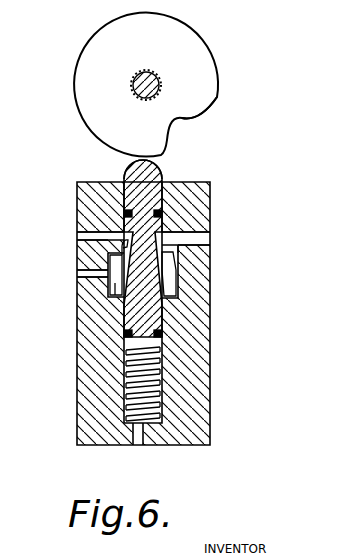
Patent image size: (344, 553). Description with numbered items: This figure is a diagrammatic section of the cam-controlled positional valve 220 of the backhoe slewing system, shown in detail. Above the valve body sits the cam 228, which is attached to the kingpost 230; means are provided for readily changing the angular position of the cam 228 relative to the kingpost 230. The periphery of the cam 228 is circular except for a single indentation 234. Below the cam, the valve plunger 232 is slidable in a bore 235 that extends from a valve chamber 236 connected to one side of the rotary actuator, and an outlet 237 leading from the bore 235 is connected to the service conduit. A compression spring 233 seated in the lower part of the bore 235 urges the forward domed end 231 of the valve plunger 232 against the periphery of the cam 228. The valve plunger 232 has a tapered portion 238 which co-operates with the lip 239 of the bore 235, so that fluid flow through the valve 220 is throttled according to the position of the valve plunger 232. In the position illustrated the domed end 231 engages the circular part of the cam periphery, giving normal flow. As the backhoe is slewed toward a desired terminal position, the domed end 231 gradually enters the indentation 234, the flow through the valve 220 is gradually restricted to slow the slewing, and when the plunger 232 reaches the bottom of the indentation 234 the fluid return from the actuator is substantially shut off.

The valve 220 is at (252, 358).
The cam 228 is at (218, 80).
The kingpost 230 is at (160, 82).
The forward domed end 231 is at (158, 164).
The valve plunger 232 is at (146, 283).
The compression spring 233 is at (125, 385).
The indentation 234 is at (185, 118).
The bore 235 is at (125, 244).
The valve chamber 236 is at (112, 299).
The outlet 237 is at (190, 238).
The tapered portion 238 is at (162, 264).
The lip 239 is at (77, 273).